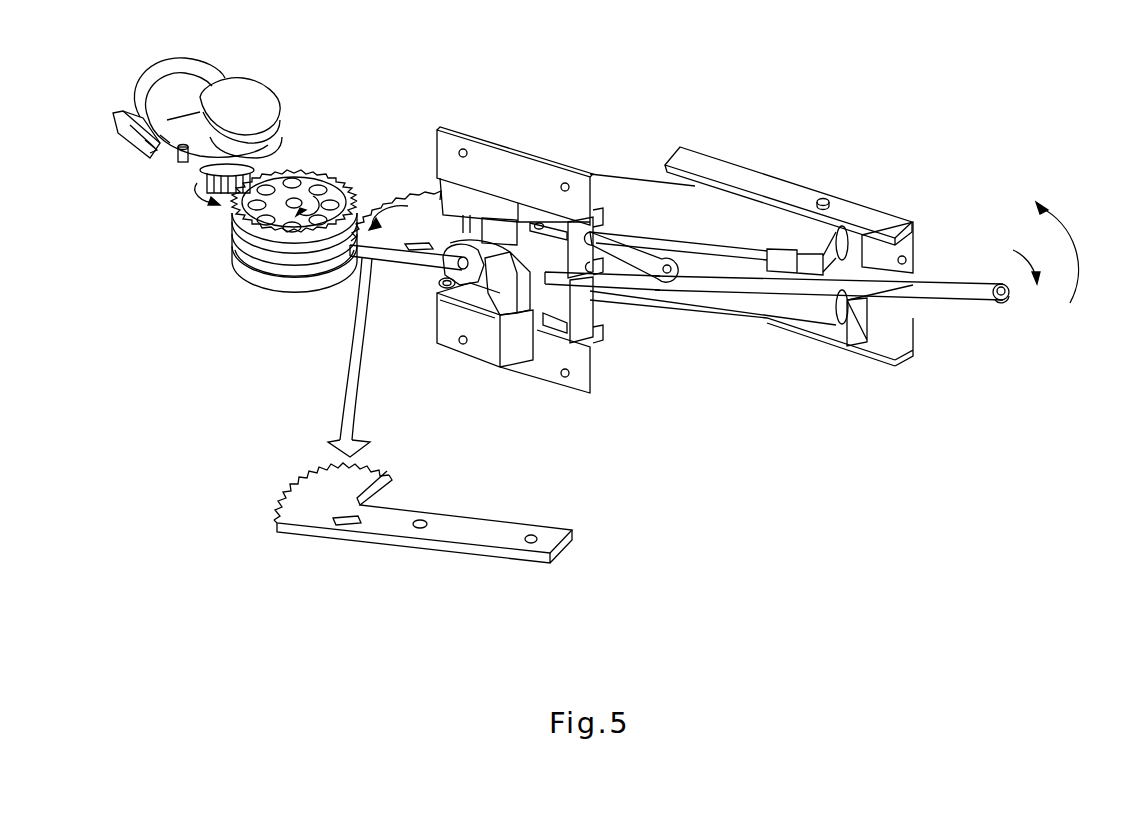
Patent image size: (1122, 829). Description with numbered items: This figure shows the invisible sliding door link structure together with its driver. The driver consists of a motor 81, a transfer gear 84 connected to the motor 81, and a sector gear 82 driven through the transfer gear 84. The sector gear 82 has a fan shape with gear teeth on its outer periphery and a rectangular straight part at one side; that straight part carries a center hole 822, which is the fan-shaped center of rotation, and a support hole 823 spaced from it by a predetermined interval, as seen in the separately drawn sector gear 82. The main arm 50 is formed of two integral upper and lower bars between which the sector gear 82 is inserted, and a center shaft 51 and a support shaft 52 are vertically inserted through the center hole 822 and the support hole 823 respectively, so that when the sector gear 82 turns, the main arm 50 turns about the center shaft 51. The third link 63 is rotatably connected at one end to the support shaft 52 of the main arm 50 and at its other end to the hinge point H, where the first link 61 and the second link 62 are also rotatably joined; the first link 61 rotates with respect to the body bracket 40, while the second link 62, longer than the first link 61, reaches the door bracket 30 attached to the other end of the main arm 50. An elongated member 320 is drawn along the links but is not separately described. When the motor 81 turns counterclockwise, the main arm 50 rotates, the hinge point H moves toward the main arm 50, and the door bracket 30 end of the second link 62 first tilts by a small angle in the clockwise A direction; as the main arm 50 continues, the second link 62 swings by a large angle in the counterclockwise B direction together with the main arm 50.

The motor 81 is at (256, 96).
The transfer gear 84 is at (317, 188).
The sector gear 82 is at (413, 198).
The center hole 822 is at (421, 529).
The support hole 823 is at (530, 544).
The main arm 50 is at (614, 183).
The support shaft 52 is at (547, 220).
The center shaft 51 is at (462, 244).
The door bracket 30 is at (778, 185).
The third link 63 is at (636, 255).
The first link 61 is at (630, 278).
The second link 62 is at (806, 282).
The bar 320 is at (706, 300).
The body bracket 40 is at (551, 358).
The hinge point H is at (658, 282).
The A direction A is at (1030, 280).
The B direction B is at (1066, 252).